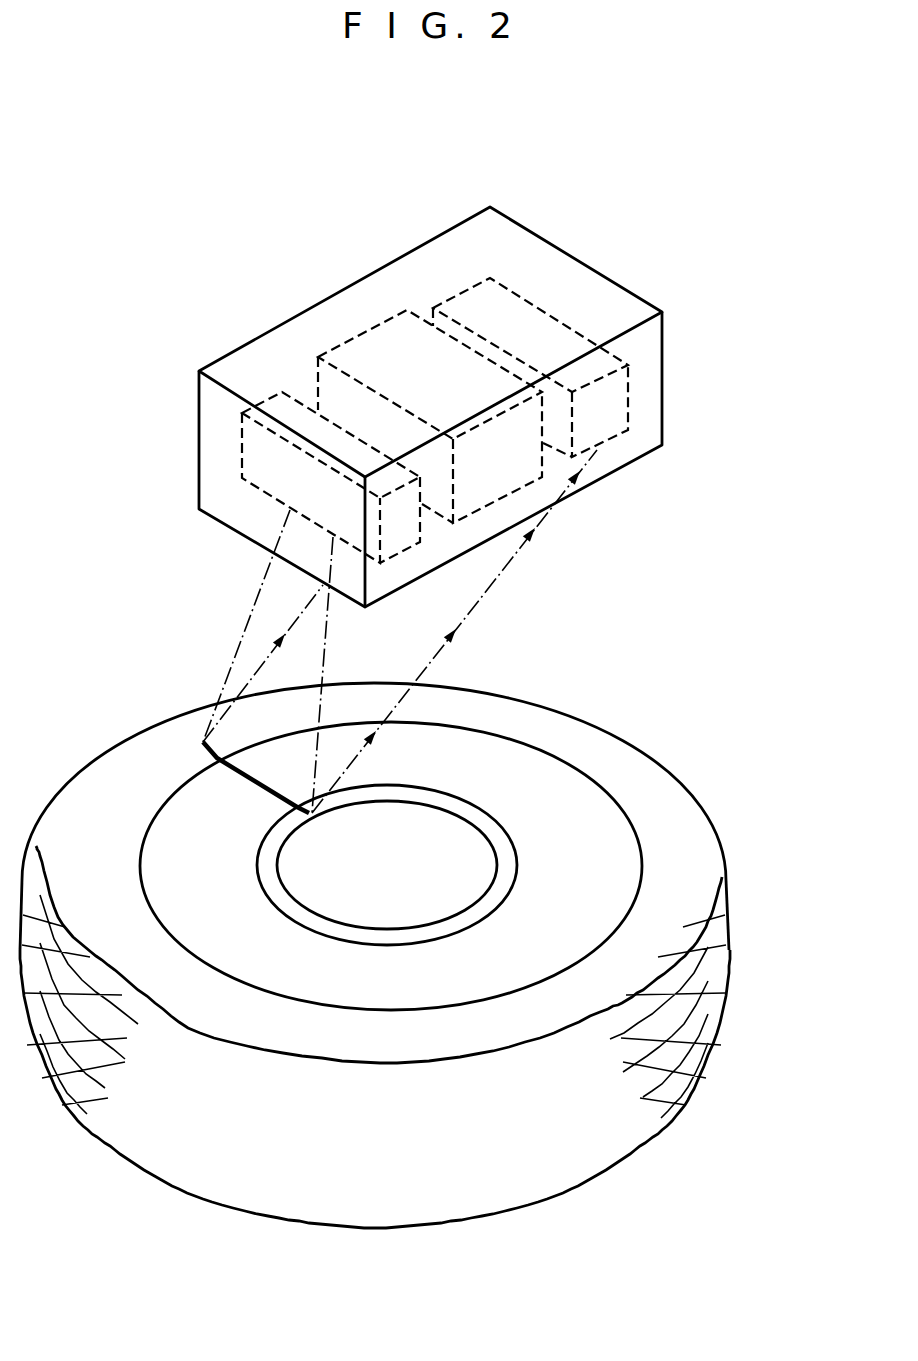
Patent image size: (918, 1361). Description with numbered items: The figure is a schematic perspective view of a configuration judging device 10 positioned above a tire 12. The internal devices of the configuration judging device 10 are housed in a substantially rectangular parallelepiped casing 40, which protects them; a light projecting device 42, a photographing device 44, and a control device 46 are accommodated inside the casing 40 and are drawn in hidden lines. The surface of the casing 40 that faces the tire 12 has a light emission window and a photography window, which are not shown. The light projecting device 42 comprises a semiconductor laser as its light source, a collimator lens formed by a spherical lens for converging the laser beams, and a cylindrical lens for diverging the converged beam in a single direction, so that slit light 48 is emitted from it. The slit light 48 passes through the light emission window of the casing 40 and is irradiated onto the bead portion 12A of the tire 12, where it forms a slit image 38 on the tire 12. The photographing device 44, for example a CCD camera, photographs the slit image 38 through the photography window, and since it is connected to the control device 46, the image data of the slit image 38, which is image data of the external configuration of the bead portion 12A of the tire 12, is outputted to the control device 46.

The configuration judging device 10 is at (433, 407).
The tire 12 is at (403, 955).
The bead portion 12A is at (545, 796).
The slit image 38 is at (220, 771).
The casing 40 is at (650, 350).
The light projecting device 42 is at (250, 440).
The photographing device 44 is at (617, 427).
The control device 46 is at (345, 348).
The slit light 48 is at (262, 593).